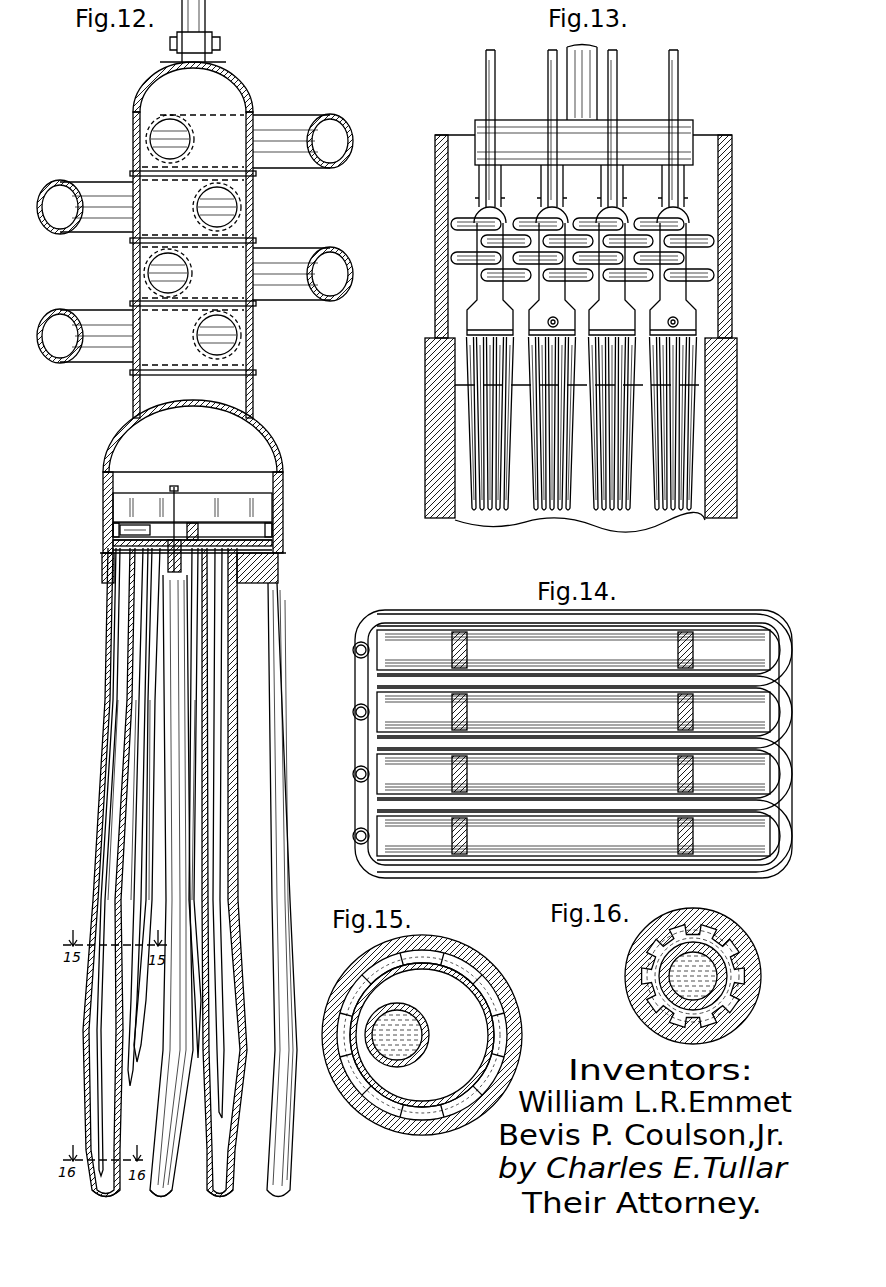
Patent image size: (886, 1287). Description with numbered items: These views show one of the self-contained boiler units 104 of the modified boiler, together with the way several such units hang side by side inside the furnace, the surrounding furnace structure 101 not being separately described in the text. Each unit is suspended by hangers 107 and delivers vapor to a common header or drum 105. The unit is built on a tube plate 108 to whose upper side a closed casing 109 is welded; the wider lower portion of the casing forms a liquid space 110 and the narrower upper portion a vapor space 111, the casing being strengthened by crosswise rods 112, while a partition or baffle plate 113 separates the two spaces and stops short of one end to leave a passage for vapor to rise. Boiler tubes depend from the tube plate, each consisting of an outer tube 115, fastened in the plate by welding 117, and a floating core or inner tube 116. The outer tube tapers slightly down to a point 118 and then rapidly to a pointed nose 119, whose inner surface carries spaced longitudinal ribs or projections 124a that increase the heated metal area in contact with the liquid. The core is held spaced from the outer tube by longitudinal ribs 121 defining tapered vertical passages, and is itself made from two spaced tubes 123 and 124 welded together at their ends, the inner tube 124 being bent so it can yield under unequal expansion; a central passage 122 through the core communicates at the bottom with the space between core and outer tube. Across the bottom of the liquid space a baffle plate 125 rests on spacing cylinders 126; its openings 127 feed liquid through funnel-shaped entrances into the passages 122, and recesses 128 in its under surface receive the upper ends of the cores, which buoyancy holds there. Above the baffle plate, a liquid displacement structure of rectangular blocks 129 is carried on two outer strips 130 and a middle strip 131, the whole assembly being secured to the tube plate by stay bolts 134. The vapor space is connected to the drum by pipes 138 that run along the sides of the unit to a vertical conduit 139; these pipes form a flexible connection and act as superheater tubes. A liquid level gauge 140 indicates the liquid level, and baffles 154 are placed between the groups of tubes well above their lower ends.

In FIG. 13, the casing wall 101 is at (737, 362).
In FIG. 12, the boiler unit 104 is at (173, 244).
In FIG. 13, the boiler unit 104 is at (582, 358).
In FIG. 14, the boiler unit 104 is at (573, 743).
In FIG. 13, the header or drum 105 is at (584, 142).
In FIG. 13, the hanger 107 is at (548, 87).
In FIG. 14, the hanger 107 is at (692, 713).
In FIG. 12, the tube plate 108 is at (280, 573).
In FIG. 12, the casing 109 is at (105, 498).
In FIG. 12, the liquid space 110 is at (193, 455).
In FIG. 12, the vapor space 111 is at (193, 240).
In FIG. 12, the rod 112 is at (203, 172).
In FIG. 12, the partition plate or baffle plate 113 is at (193, 401).
In FIG. 12, the outer tube 115 is at (183, 773).
In FIG. 15, the outer tube 115 is at (515, 1005).
In FIG. 12, the core or inner tube 116 is at (195, 733).
In FIG. 12, the weld 117 is at (103, 560).
In FIG. 12, the point of taper change 118 is at (85, 1072).
In FIG. 12, the pointed nose 119 is at (207, 1181).
In FIG. 16, the pointed nose 119 is at (743, 1023).
In FIG. 15, the longitudinally-extending rib 121 is at (497, 1073).
In FIG. 12, the inner passage 122 is at (215, 815).
In FIG. 15, the inner passage 122 is at (417, 1015).
In FIG. 16, the inner passage 122 is at (715, 976).
In FIG. 12, the tube 123 is at (198, 850).
In FIG. 15, the tube 123 is at (480, 975).
In FIG. 12, the inner tube 124 is at (202, 882).
In FIG. 15, the inner tube 124 is at (430, 1032).
In FIG. 16, the inner tube 124 is at (740, 987).
In FIG. 12, the rib or projection 124a is at (95, 1190).
In FIG. 16, the rib or projection 124a is at (730, 952).
In FIG. 12, the baffle plate 125 is at (277, 541).
In FIG. 12, the spacing cylinder 126 is at (278, 550).
In FIG. 12, the opening 127 is at (143, 534).
In FIG. 12, the recess 128 is at (120, 539).
In FIG. 12, the rectangular block 129 is at (223, 493).
In FIG. 12, the outer strip 130 is at (117, 526).
In FIG. 12, the middle strip 131 is at (191, 523).
In FIG. 12, the stay bolt 134 is at (175, 486).
In FIG. 12, the pipe 138 is at (283, 248).
In FIG. 13, the pipe 138 is at (710, 242).
In FIG. 14, the pipe 138 is at (493, 670).
In FIG. 13, the vertical conduit 139 is at (602, 177).
In FIG. 14, the vertical conduit 139 is at (355, 710).
In FIG. 13, the liquid level gauge 140 is at (558, 317).
In FIG. 13, the baffle 154 is at (465, 380).